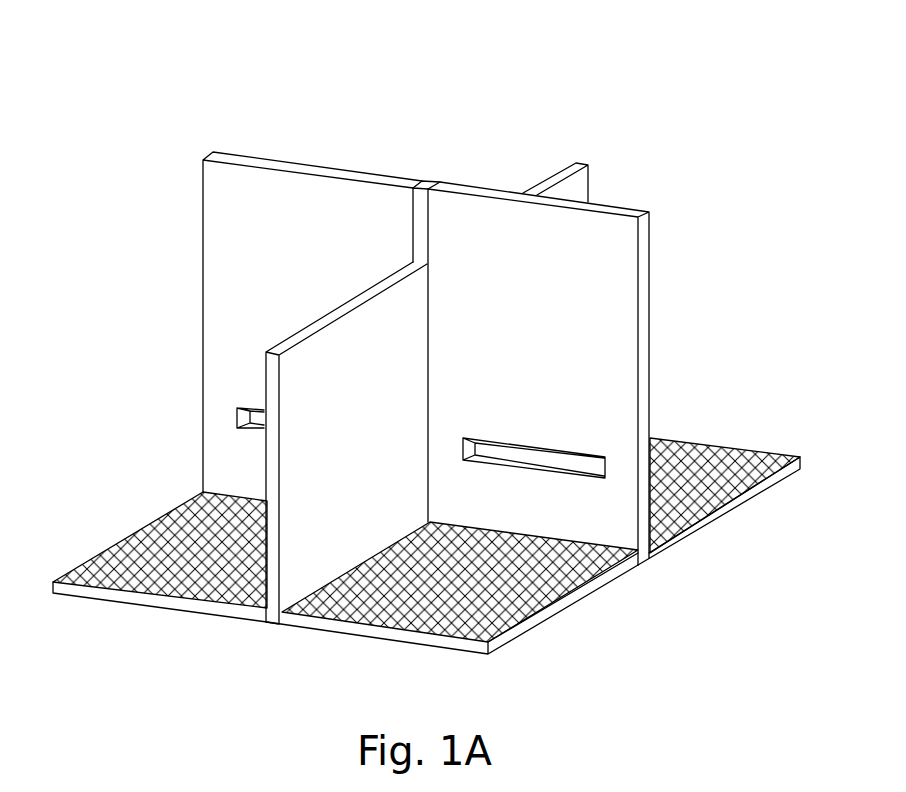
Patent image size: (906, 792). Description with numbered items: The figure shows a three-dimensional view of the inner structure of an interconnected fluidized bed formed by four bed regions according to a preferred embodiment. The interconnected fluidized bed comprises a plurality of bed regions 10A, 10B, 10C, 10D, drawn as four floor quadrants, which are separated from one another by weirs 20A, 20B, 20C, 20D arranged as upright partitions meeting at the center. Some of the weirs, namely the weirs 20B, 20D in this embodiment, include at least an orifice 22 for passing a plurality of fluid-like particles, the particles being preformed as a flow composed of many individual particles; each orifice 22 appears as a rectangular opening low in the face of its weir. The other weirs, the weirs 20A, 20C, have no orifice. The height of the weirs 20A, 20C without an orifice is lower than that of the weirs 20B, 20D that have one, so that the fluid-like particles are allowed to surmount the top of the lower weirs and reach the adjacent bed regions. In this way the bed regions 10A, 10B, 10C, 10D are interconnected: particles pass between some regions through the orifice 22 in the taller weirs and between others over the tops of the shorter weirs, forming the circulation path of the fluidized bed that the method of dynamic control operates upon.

The bed region 10A is at (503, 593).
The bed region 10B is at (183, 517).
The bed region 10C is at (457, 158).
The bed region 10D is at (697, 451).
The weir 20A is at (270, 552).
The weir 20B is at (238, 158).
The weir 20C is at (580, 163).
The weir 20D is at (630, 213).
The orifice 22 is at (575, 457).